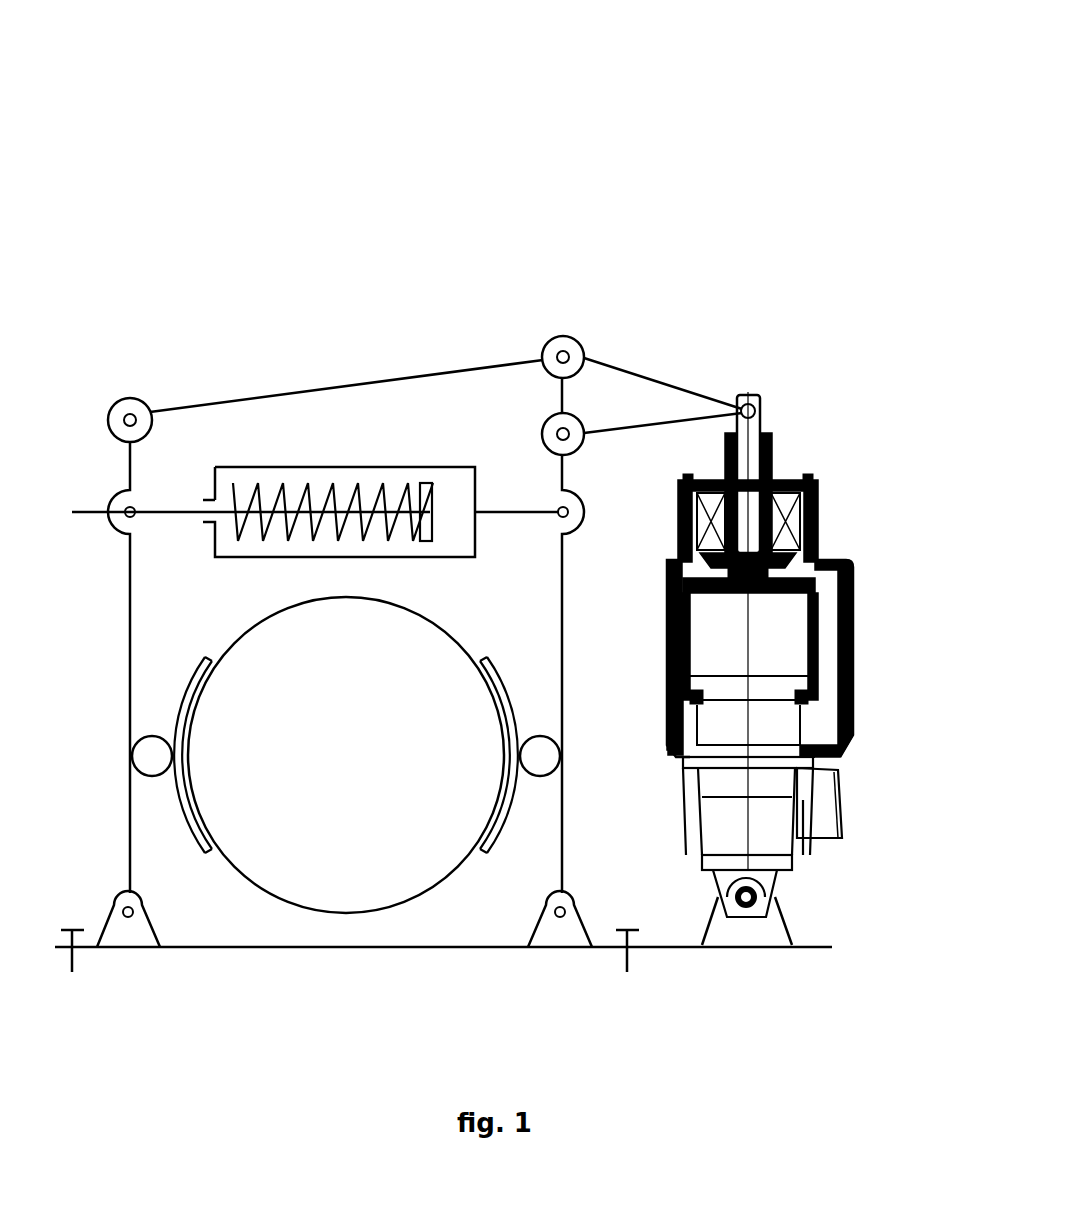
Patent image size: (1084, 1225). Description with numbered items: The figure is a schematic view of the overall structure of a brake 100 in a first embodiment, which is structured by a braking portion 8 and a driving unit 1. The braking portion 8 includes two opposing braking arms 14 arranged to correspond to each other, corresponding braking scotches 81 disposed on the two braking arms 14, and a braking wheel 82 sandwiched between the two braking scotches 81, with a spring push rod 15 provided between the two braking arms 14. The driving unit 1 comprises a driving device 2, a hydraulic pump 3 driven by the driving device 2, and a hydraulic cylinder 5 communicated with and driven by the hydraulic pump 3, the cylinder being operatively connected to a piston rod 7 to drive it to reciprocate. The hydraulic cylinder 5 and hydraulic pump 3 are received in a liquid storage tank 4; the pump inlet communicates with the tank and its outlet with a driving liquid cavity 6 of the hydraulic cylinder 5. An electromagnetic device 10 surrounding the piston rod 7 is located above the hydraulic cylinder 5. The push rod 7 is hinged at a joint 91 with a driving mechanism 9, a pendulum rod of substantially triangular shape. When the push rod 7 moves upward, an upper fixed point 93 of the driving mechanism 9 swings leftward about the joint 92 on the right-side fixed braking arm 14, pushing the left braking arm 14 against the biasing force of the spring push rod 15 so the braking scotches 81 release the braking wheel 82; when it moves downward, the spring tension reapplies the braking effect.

The brake 100 is at (452, 310).
The braking portion 8 is at (336, 345).
The spring push rod 15 is at (206, 500).
The braking arm 14 is at (130, 646).
The braking scotch 81 is at (190, 705).
The braking wheel 82 is at (316, 812).
The upper fixed point 93 is at (553, 336).
The joint 92 is at (541, 435).
The driving mechanism 9 is at (594, 392).
The joint 91 is at (737, 400).
The driving unit 1 is at (815, 360).
The piston rod 7 is at (752, 483).
The electromagnetic device 10 is at (793, 522).
The liquid storage tank 4 is at (852, 572).
The hydraulic cylinder 5 is at (818, 620).
The driving liquid cavity 6 is at (782, 640).
The hydraulic pump 3 is at (762, 723).
The driving device 2 is at (772, 822).